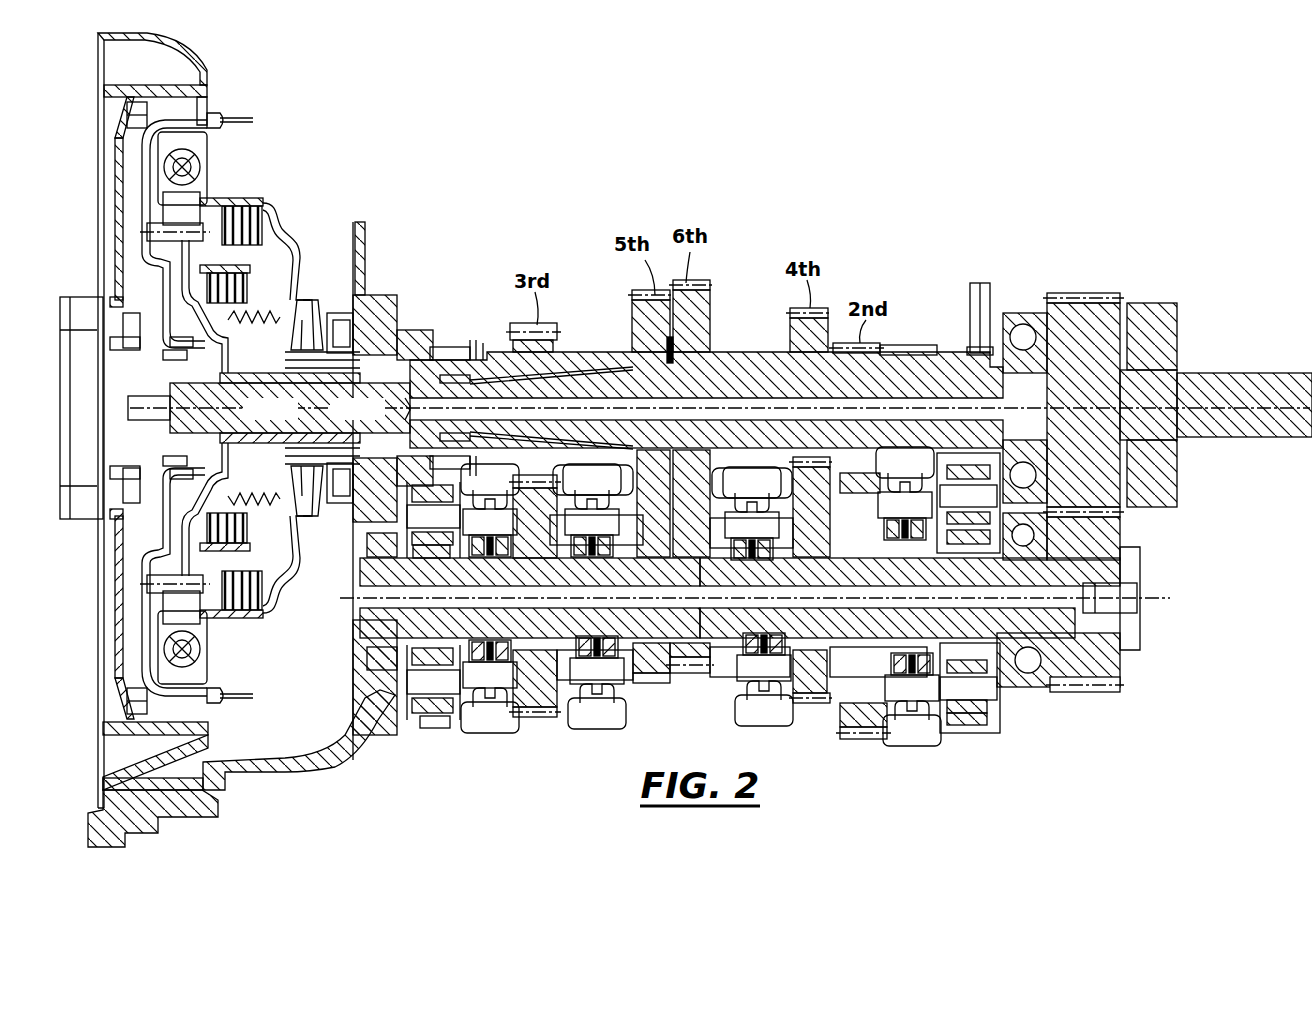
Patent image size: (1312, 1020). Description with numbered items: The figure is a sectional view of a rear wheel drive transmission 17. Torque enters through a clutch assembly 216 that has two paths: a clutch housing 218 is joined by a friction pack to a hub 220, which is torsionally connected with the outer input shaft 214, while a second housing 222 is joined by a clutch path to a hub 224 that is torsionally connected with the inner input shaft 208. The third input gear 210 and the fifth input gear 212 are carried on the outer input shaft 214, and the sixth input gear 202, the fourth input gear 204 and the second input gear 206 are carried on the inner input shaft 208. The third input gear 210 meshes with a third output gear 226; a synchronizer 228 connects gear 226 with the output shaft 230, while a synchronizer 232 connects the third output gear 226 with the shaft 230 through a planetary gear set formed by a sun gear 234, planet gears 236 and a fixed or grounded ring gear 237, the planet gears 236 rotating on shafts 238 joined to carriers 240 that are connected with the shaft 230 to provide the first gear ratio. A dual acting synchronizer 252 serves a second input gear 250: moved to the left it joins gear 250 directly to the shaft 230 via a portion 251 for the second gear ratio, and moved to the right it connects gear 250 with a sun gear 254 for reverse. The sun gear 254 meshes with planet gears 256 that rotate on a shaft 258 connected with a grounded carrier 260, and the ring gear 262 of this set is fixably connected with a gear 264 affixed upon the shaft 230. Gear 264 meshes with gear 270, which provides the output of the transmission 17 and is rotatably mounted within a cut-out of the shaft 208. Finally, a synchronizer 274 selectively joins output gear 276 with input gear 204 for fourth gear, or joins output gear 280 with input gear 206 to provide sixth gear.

The transmission 17 is at (754, 180).
The clutch assembly 216 is at (286, 184).
The housing 222 is at (268, 280).
The clutch housing 218 is at (283, 262).
The hub 224 is at (170, 362).
The hub 220 is at (290, 408).
The planet gears 236 is at (666, 400).
The outer input shaft 214 is at (577, 350).
The third input gear 210 is at (507, 330).
The fifth input gear 212 is at (648, 297).
The sixth input gear 202 is at (703, 285).
The fourth input gear 204 is at (823, 310).
The second input gear 206 is at (880, 343).
The inner input shaft 208 is at (940, 355).
The gear 270 is at (1108, 303).
The ring gear 262 is at (1045, 440).
The gear 264 is at (1120, 530).
The grounded carrier 260 is at (1000, 472).
The sun gear 234 is at (470, 565).
The sun gear 254 is at (965, 565).
The shafts 238 is at (413, 513).
The carriers 240 is at (403, 477).
The ring gear 237 is at (437, 737).
The synchronizer 232 is at (483, 703).
The third output gear 226 is at (560, 720).
The synchronizer 228 is at (583, 703).
The output gear 280 is at (703, 690).
The synchronizer 274 is at (743, 693).
The output gear 276 is at (820, 703).
The portion 251 is at (832, 697).
The second input gear 250 is at (870, 743).
The synchronizer 252 is at (912, 723).
The planet gears 256 is at (1003, 700).
The shaft 258 is at (987, 688).
The output shaft 230 is at (1127, 637).